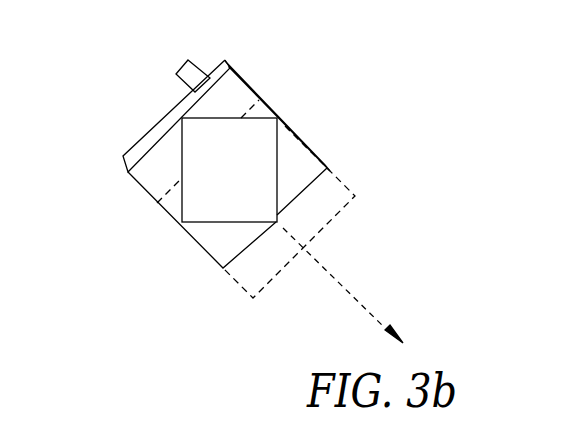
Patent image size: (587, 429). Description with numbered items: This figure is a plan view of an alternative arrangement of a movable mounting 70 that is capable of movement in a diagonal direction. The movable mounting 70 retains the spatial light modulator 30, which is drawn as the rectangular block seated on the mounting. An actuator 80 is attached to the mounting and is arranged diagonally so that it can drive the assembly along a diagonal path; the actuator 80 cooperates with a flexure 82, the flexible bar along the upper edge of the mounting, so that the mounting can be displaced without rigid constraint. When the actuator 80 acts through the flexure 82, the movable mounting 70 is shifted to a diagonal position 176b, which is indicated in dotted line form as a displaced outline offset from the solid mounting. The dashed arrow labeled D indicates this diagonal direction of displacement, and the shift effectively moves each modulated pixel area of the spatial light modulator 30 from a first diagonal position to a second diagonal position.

The spatial light modulator 30 is at (277, 154).
The movable mounting 70 is at (252, 82).
The actuator 80 is at (200, 64).
The flexure 82 is at (147, 141).
The diagonal position 176b is at (235, 279).
The direction of movement D is at (352, 292).